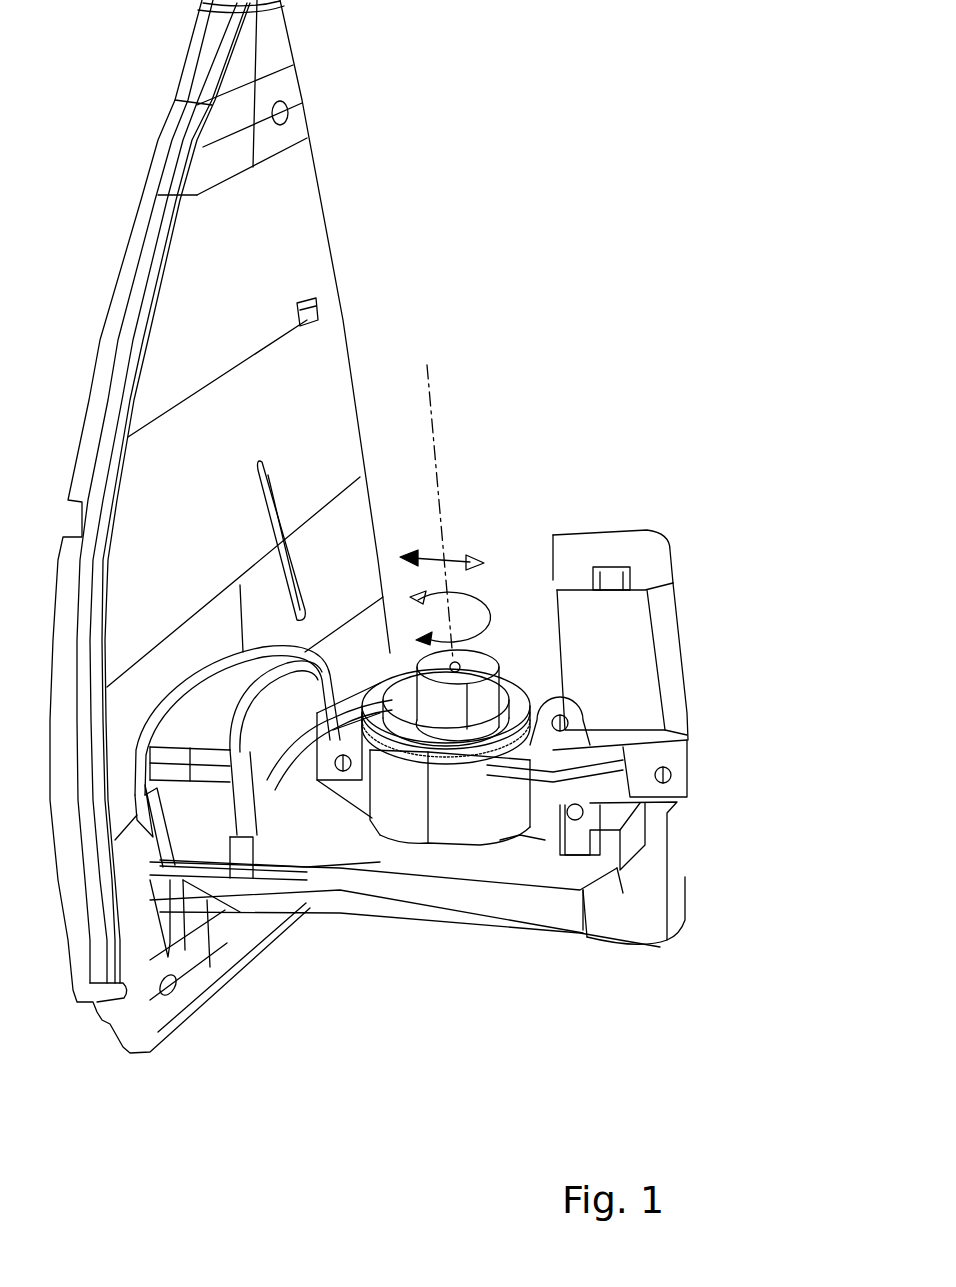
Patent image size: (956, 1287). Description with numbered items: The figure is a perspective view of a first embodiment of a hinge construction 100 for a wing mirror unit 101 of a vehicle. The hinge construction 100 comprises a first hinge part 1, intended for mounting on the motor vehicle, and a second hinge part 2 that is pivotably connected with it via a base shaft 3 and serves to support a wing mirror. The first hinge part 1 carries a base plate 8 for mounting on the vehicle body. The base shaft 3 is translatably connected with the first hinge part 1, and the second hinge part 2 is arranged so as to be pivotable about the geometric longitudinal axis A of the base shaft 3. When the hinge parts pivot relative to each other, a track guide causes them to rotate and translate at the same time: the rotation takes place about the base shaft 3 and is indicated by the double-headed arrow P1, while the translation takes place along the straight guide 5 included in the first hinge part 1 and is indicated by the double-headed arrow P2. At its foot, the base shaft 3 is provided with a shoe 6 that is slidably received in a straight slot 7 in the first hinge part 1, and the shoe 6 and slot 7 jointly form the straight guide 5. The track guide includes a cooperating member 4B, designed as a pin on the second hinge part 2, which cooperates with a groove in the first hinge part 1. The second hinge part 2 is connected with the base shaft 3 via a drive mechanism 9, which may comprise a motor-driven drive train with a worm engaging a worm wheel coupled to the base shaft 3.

The first hinge part 1 is at (480, 893).
The second hinge part 2 is at (663, 750).
The base shaft 3 is at (483, 653).
The cooperating member 4B is at (590, 840).
The straight guide 5 is at (520, 857).
The shoe 6 is at (540, 840).
The straight slot 7 is at (627, 882).
The base plate 8 is at (332, 355).
The drive mechanism 9 is at (633, 627).
The hinge construction 100 is at (413, 536).
The wing mirror unit 101 is at (538, 696).
The geometric longitudinal axis A is at (432, 392).
The double-headed arrow indicating rotation P1 is at (478, 650).
The double-headed arrow indicating translation P2 is at (452, 557).